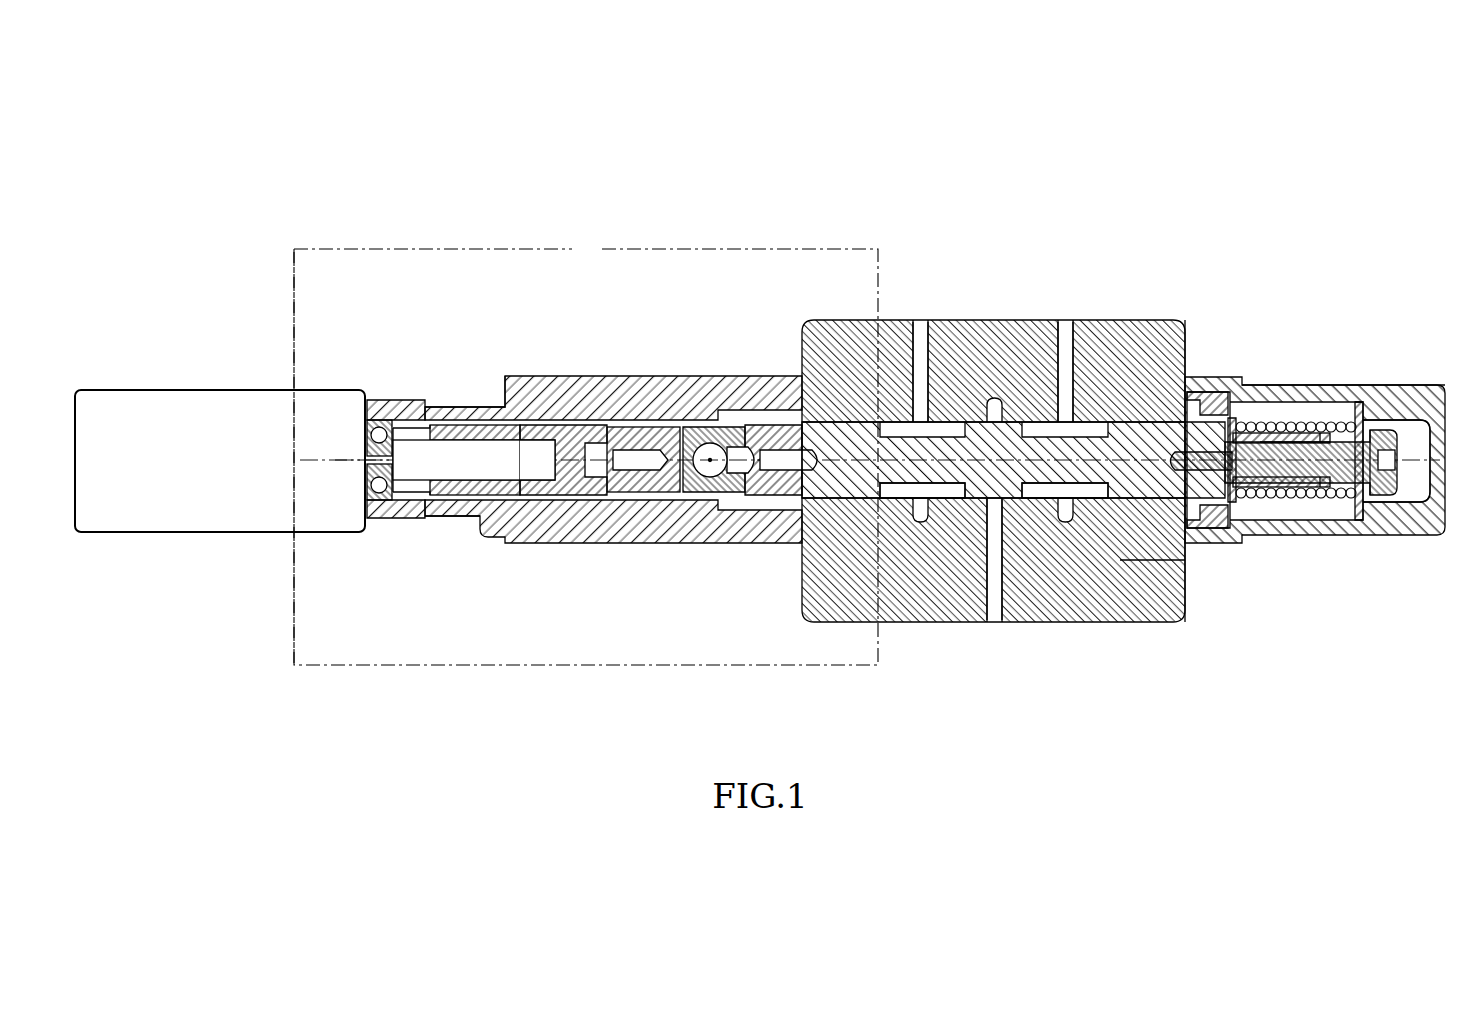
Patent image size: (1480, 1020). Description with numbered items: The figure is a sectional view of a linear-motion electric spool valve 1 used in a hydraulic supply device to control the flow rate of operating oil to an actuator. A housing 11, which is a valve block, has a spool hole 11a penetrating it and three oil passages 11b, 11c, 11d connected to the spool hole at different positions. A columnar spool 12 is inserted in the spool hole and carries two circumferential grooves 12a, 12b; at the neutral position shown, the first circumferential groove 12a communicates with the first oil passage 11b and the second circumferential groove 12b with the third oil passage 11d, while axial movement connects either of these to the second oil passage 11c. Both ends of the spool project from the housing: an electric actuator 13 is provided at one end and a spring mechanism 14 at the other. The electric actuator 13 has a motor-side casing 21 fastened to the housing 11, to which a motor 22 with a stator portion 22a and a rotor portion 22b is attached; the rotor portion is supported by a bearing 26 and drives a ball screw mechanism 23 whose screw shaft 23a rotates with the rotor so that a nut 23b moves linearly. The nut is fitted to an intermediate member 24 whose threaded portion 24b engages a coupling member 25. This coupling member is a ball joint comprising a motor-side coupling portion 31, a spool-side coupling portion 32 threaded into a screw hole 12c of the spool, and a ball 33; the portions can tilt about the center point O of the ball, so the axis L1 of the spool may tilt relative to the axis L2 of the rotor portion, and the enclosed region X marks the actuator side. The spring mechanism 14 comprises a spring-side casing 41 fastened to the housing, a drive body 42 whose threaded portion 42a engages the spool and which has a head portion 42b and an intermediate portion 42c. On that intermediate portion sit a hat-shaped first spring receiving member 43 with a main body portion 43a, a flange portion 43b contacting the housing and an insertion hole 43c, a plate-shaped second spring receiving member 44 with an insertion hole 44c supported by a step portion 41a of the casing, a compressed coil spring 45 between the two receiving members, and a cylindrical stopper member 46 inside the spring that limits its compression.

The spool valve 1 is at (1328, 152).
The housing 11 is at (1130, 326).
The spool hole 11a is at (1142, 560).
The first oil passage 11b is at (921, 322).
The second oil passage 11c is at (991, 632).
The third oil passage 11d is at (1066, 322).
The spool 12 is at (979, 440).
The first circumferential groove 12a is at (952, 500).
The second circumferential groove 12b is at (1047, 500).
The screw hole 12c is at (812, 448).
The electric actuator 13 is at (262, 291).
The spring mechanism 14 is at (1375, 268).
The motor-side casing 21 is at (583, 392).
The motor 22 is at (320, 548).
The stator portion 22a is at (232, 520).
The rotor portion 22b is at (384, 418).
The ball screw mechanism 23 is at (498, 539).
The screw shaft 23a is at (416, 497).
The nut 23b is at (470, 497).
The intermediate member 24 is at (556, 545).
The threaded portion 24b is at (632, 478).
The coupling member 25 is at (718, 388).
The bearing 26 is at (377, 512).
The motor-side coupling portion 31 is at (690, 432).
The spool-side coupling portion 32 is at (753, 430).
The ball 33 is at (709, 444).
The spring-side casing 41 is at (1300, 386).
The step portion 41a is at (1360, 396).
The drive body 42 is at (1421, 396).
The threaded portion 42a is at (1233, 502).
The head portion 42b is at (1392, 500).
The intermediate portion 42c is at (1284, 502).
The first spring receiving member 43 is at (1253, 366).
The main body portion 43a is at (1224, 394).
The flange portion 43b is at (1194, 382).
The insertion hole 43c is at (1283, 400).
The second spring receiving member 44 is at (1361, 524).
The insertion hole 44c is at (1370, 400).
The coil spring 45 is at (1330, 500).
The stopper member 46 is at (1240, 522).
The center point O is at (707, 470).
The axis L1 is at (738, 500).
The axis L2 is at (333, 462).
The region X is at (586, 450).